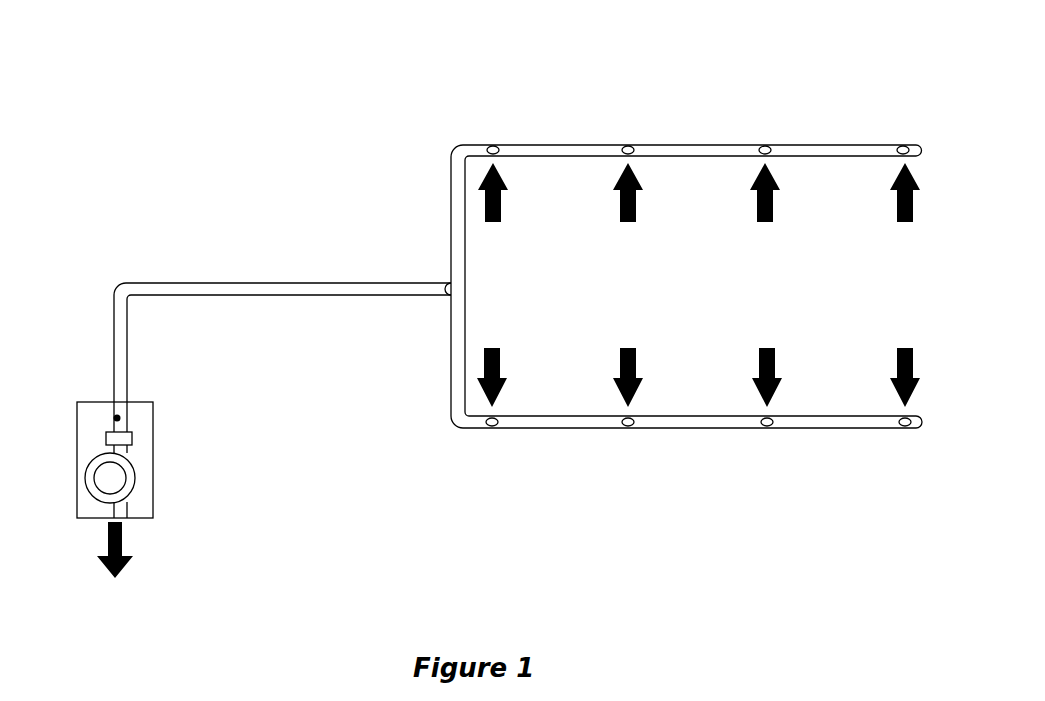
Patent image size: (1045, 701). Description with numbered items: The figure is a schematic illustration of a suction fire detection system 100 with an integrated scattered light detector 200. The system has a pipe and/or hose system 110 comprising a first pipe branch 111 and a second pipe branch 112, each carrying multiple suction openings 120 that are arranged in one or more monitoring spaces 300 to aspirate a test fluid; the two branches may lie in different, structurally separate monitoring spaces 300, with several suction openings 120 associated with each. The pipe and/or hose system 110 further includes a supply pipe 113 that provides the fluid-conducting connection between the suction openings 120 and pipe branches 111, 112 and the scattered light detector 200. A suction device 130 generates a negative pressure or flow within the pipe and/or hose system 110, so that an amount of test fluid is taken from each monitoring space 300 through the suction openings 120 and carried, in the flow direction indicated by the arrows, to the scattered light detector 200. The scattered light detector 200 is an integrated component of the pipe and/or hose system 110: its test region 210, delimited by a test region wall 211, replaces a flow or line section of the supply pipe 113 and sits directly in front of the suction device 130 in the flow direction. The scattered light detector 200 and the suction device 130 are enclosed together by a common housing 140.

The suction fire detection system 100 is at (490, 318).
The pipe and/or hose system 110 is at (518, 287).
The first pipe branch 111 is at (692, 78).
The second pipe branch 112 is at (692, 494).
The supply pipe 113 is at (282, 286).
The suction openings 120 is at (698, 288).
The suction device 130 is at (200, 523).
The common housing 140 is at (168, 568).
The scattered light detector 200 is at (174, 464).
The test region 210 is at (201, 397).
The test region wall 211 is at (82, 373).
The monitoring space 300 is at (876, 293).